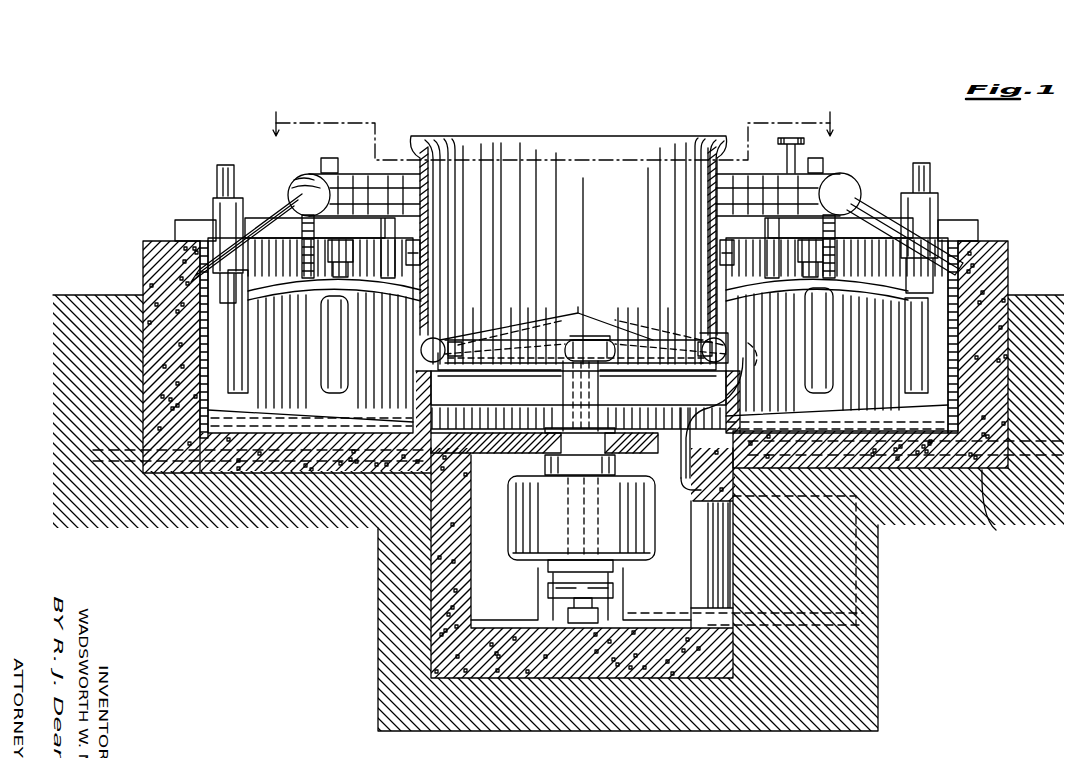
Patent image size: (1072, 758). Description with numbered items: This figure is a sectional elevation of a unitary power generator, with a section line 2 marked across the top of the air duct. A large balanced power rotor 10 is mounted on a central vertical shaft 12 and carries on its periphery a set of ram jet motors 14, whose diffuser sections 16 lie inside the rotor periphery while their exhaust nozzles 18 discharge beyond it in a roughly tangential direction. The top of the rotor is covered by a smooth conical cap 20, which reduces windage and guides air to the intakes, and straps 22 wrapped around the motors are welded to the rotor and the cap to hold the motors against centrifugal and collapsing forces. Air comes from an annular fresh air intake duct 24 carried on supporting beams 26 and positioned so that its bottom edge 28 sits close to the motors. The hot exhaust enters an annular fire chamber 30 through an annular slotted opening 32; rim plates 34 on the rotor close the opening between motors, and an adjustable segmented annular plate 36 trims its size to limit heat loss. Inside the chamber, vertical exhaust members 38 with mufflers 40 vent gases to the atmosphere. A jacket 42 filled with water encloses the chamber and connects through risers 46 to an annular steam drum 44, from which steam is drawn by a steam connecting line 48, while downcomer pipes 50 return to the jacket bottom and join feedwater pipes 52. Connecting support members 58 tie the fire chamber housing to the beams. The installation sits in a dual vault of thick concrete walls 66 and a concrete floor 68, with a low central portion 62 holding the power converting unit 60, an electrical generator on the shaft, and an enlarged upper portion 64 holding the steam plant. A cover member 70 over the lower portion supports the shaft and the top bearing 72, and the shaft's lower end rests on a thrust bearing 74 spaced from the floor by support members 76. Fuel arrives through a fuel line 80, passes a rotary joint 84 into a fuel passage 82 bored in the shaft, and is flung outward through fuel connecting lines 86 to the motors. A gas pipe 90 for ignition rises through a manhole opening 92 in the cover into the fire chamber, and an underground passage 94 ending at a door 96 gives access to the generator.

The section line 2 is at (552, 134).
The power rotor 10 is at (512, 368).
The shaft 12 is at (555, 380).
The ram jet motors 14 is at (579, 311).
The diffuser sections 16 is at (456, 332).
The exhaust nozzles 18 is at (417, 354).
The conical cap 20 is at (557, 308).
The straps 22 is at (414, 340).
The air intake duct 24 is at (602, 133).
The supporting beams 26 is at (405, 234).
The bottom edge 28 is at (433, 302).
The fire chamber 30 is at (281, 330).
The annular slotted opening 32 is at (726, 330).
The rim plates 34 is at (515, 324).
The adjustable segmented annular plate 36 is at (425, 388).
The exhaust members 38 is at (314, 338).
The mufflers 40 is at (217, 157).
The jacket 42 is at (315, 405).
The annular steam drum 44 is at (286, 164).
The risers 46 is at (373, 220).
The steam connecting line 48 is at (772, 130).
The downcomer pipes 50 is at (282, 200).
The feedwater pipes 52 is at (80, 463).
The connecting support members 58 is at (390, 255).
The power converting unit 60 is at (500, 520).
The low central portion 62 is at (674, 540).
The enlarged upper portion 64 is at (1007, 236).
The concrete walls 66 is at (423, 540).
The concrete floor 68 is at (472, 620).
The cover member 70 is at (501, 447).
The top bearing 72 is at (537, 453).
The thrust bearing 74 is at (540, 575).
The support members 76 is at (540, 590).
The fuel line 80 is at (654, 604).
The fuel passage 82 is at (525, 500).
The rotary joint 84 is at (556, 600).
The fuel connecting lines 86 is at (442, 370).
The gas pipe 90 is at (677, 472).
The manhole opening 92 is at (663, 453).
The underground passage 94 is at (850, 550).
The door 96 is at (720, 570).